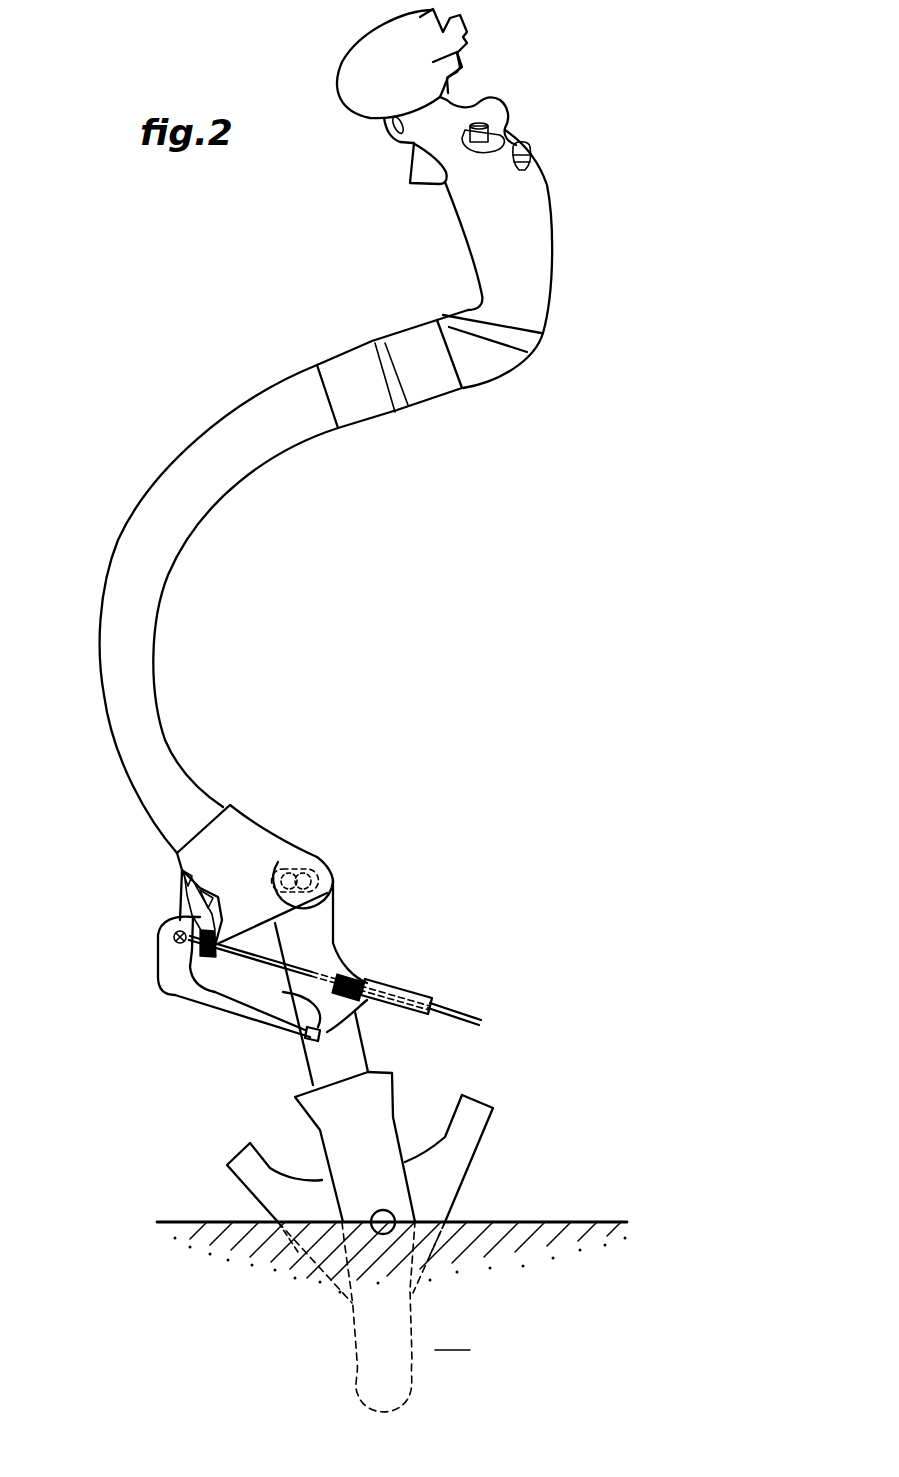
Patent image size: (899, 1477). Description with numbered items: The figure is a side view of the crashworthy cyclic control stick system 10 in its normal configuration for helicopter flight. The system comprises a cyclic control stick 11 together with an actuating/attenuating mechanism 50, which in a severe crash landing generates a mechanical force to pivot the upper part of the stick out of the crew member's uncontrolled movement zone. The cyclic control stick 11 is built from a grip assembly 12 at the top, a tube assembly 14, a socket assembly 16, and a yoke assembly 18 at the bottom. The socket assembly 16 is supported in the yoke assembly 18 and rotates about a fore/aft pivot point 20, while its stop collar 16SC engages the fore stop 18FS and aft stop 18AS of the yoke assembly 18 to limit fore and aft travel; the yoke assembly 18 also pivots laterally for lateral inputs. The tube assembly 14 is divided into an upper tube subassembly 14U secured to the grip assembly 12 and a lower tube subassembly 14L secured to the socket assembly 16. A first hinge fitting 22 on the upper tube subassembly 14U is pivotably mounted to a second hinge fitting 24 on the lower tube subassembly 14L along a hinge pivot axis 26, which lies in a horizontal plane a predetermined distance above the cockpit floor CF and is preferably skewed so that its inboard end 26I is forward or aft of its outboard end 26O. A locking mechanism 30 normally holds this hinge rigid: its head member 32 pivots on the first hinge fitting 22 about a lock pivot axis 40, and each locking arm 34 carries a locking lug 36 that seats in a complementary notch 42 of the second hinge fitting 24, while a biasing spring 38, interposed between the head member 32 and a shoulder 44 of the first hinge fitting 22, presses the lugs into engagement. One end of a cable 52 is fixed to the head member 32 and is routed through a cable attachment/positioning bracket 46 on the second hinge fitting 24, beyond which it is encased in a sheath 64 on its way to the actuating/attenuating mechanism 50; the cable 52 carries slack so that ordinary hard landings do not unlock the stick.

The crashworthy cyclic control stick system 10 is at (530, 530).
The cyclic control stick 11 is at (160, 461).
The grip assembly 12 is at (553, 168).
The tube assembly 14 is at (184, 609).
The upper tube subassembly 14U is at (148, 647).
The lower tube subassembly 14L is at (325, 1063).
The socket assembly 16 is at (375, 1147).
The stop collar 16SC is at (393, 1085).
The yoke assembly 18 is at (370, 1162).
The aft stop 18AS is at (452, 1103).
The fore stop 18FS is at (267, 1150).
The fore/aft pivot point 20 is at (405, 1242).
The first hinge fitting 22 is at (233, 825).
The second hinge fitting 24 is at (323, 943).
The hinge pivot axis 26 is at (344, 868).
The inboard end of the hinge pivot axis 26I is at (323, 853).
The outboard end of the hinge pivot axis 26O is at (333, 902).
The locking mechanism 30 is at (194, 985).
The head member 32 is at (160, 962).
The locking arm 34 is at (227, 1003).
The locking lug 36 is at (303, 1037).
The biasing spring 38 is at (198, 908).
The lock pivot axis 40 is at (172, 937).
The complementary notch 42 is at (286, 1003).
The shoulder 44 is at (228, 940).
The cable attachment/positioning bracket 46 is at (367, 983).
The actuating/attenuating mechanism 50 is at (358, 975).
The cable 52 is at (477, 1018).
The sheath 64 is at (425, 998).
The cockpit floor CF is at (374, 1317).